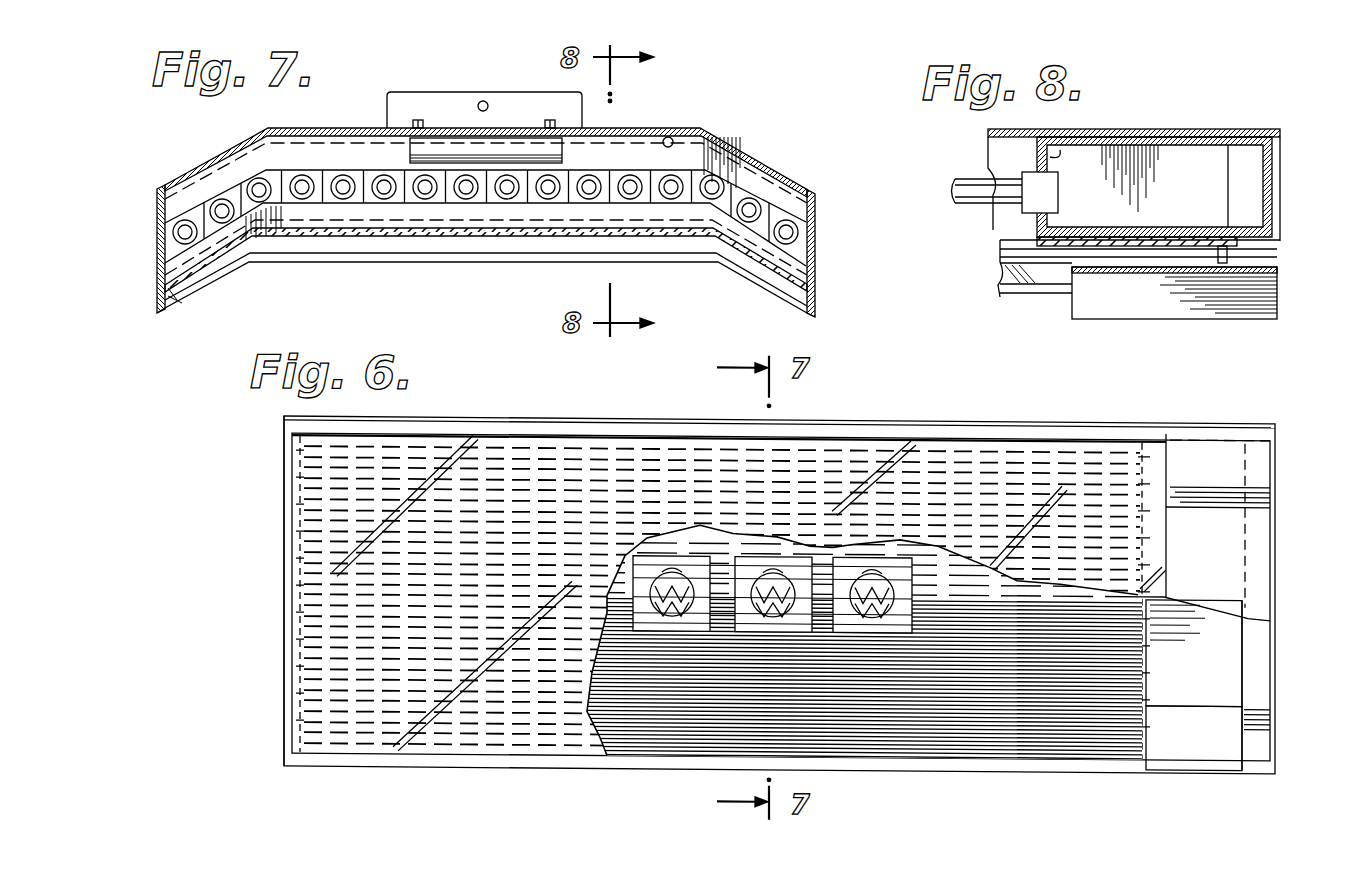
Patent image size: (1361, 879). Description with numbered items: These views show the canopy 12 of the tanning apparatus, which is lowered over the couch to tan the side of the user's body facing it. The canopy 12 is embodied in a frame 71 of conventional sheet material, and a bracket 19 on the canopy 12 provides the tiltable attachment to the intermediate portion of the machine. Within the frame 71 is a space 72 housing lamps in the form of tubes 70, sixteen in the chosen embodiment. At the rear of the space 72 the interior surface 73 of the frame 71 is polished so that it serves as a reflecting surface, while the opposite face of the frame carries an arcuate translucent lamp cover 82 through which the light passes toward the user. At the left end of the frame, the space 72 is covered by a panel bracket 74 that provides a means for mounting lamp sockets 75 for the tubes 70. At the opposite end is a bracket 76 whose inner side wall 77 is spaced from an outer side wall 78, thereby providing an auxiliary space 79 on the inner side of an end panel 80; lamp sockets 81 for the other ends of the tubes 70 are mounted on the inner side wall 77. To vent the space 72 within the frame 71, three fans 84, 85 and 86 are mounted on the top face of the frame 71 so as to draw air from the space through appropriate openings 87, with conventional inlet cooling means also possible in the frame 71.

In FIG. 7, the canopy 12 is at (507, 203).
In FIG. 6, the canopy 12 is at (884, 410).
In FIG. 7, the bracket 19 is at (395, 102).
In FIG. 7, the tubes 70 is at (222, 199).
In FIG. 8, the tubes 70 is at (972, 181).
In FIG. 6, the tubes 70 is at (484, 480).
In FIG. 7, the frame 71 is at (700, 148).
In FIG. 8, the frame 71 is at (1130, 130).
In FIG. 7, the space 72 is at (590, 156).
In FIG. 8, the space 72 is at (1000, 157).
In FIG. 7, the interior surface 73 is at (672, 138).
In FIG. 7, the panel bracket 74 is at (160, 306).
In FIG. 6, the panel bracket 74 is at (284, 617).
In FIG. 6, the lamp sockets 75 is at (293, 531).
In FIG. 8, the bracket 76 is at (1188, 140).
In FIG. 6, the bracket 76 is at (1186, 732).
In FIG. 8, the inner side wall 77 is at (1061, 150).
In FIG. 8, the outer side wall 78 is at (1282, 160).
In FIG. 6, the outer side wall 78 is at (1255, 644).
In FIG. 8, the auxiliary space 79 is at (1145, 250).
In FIG. 6, the auxiliary space 79 is at (1153, 532).
In FIG. 8, the end panel 80 is at (1282, 215).
In FIG. 6, the end panel 80 is at (1273, 728).
In FIG. 7, the lamp sockets 81 is at (425, 205).
In FIG. 8, the lamp sockets 81 is at (1031, 203).
In FIG. 6, the lamp sockets 81 is at (1153, 447).
In FIG. 7, the lamp cover 82 is at (530, 238).
In FIG. 8, the lamp cover 82 is at (1033, 247).
In FIG. 6, the lamp cover 82 is at (586, 450).
In FIG. 6, the fan 84 is at (680, 623).
In FIG. 7, the fan 85 is at (494, 143).
In FIG. 6, the fan 85 is at (770, 557).
In FIG. 6, the fan 86 is at (853, 623).
In FIG. 7, the openings 87 is at (450, 128).